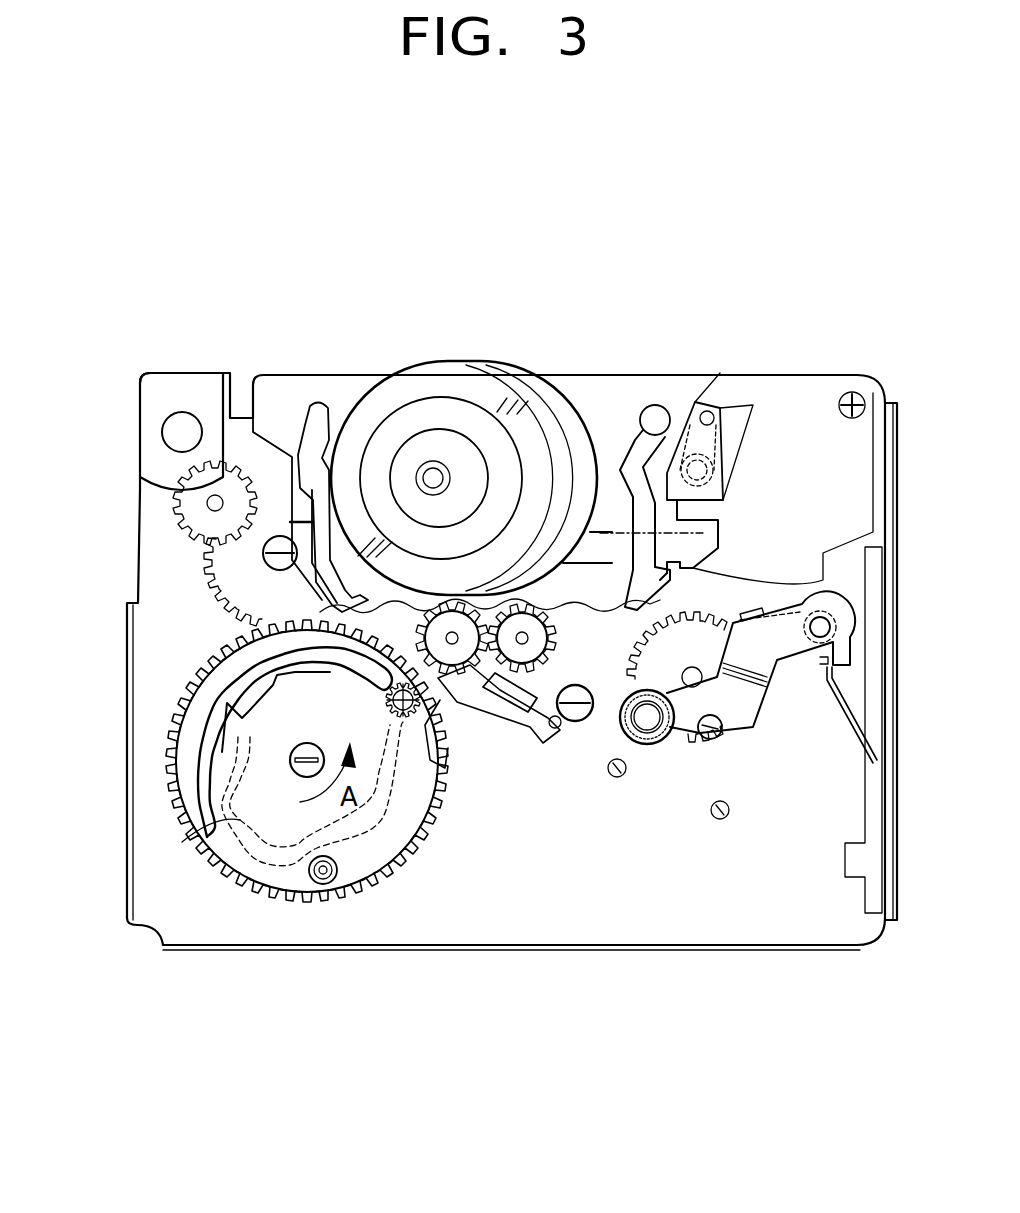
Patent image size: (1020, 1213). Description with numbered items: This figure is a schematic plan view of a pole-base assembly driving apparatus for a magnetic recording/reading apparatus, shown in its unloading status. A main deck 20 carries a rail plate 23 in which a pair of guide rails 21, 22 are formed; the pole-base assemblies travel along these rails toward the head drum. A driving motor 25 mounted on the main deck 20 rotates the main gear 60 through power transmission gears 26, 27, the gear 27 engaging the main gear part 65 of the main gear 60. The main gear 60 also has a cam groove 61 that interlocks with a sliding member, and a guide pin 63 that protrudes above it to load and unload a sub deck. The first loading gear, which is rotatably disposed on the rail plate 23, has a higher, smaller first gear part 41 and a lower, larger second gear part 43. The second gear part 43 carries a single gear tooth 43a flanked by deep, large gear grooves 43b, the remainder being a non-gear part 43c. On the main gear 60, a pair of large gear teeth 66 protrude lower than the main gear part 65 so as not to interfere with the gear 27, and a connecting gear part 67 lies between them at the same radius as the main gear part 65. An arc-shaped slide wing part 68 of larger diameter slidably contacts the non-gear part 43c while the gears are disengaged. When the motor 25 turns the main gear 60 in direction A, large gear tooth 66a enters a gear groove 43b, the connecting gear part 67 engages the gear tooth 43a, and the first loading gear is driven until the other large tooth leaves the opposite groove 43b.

The main deck 20 is at (797, 395).
The guide rail 21 is at (333, 398).
The guide rail 22 is at (645, 398).
The rail plate 23 is at (612, 400).
The driving motor 25 is at (183, 390).
The power transmission gear 26 is at (233, 487).
The power transmission gear 27 is at (203, 553).
The first gear part 41 is at (472, 600).
The second gear part 43 is at (605, 836).
The gear tooth 43a is at (490, 688).
The gear groove 43b is at (440, 700).
The non-gear part 43c is at (395, 605).
The main gear 60 is at (212, 875).
The cam groove 61 is at (208, 777).
The guide pin 63 is at (305, 884).
The main gear part 65 is at (365, 895).
The large gear teeth 66 is at (440, 748).
The large gear tooth 66a is at (427, 840).
The connecting gear part 67 is at (460, 752).
The slide wing part 68 is at (182, 842).